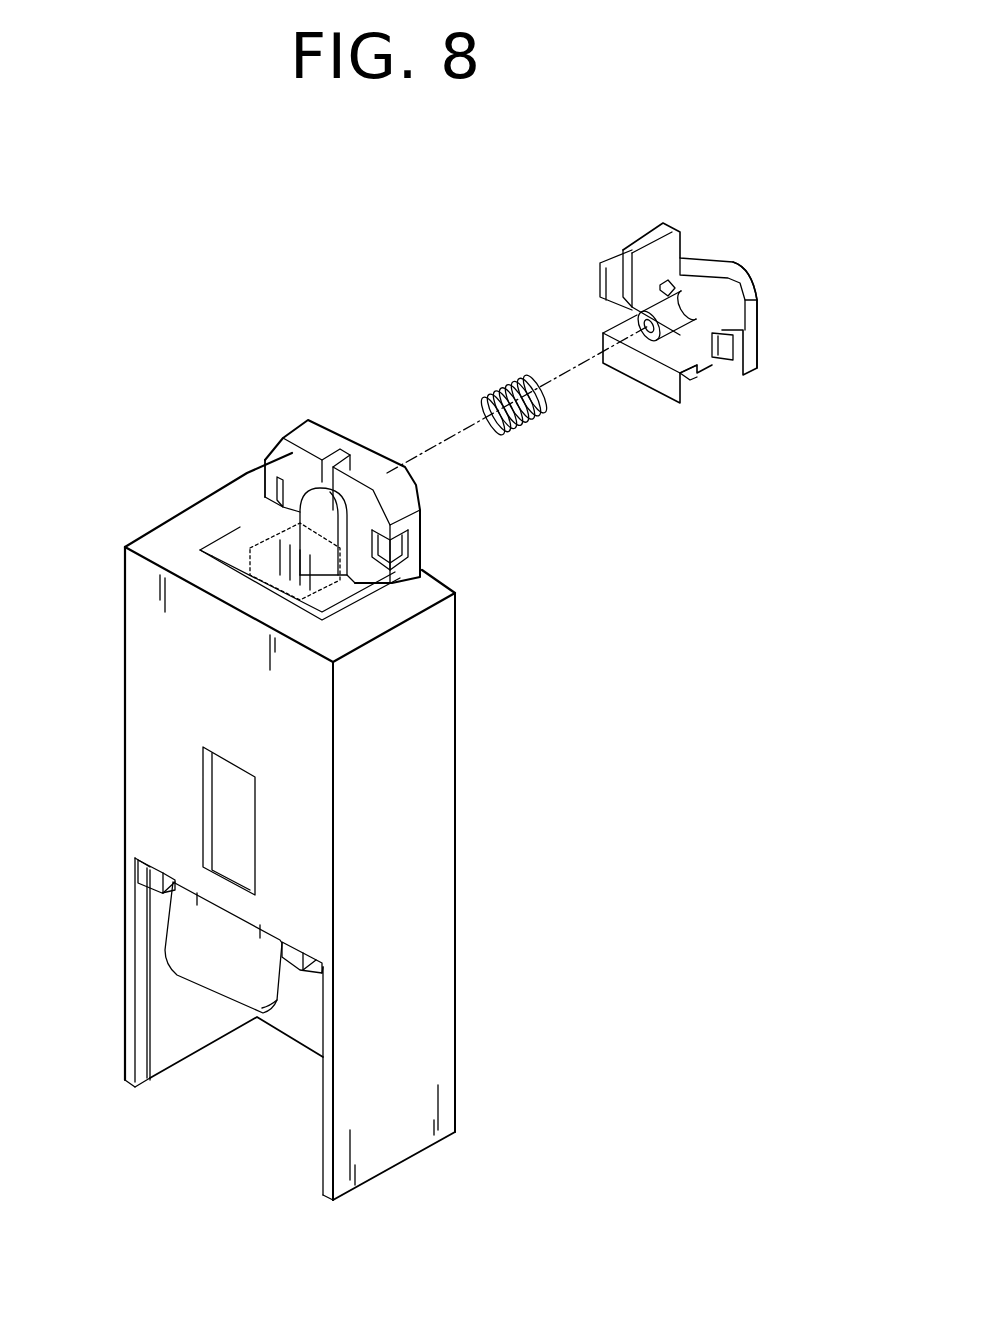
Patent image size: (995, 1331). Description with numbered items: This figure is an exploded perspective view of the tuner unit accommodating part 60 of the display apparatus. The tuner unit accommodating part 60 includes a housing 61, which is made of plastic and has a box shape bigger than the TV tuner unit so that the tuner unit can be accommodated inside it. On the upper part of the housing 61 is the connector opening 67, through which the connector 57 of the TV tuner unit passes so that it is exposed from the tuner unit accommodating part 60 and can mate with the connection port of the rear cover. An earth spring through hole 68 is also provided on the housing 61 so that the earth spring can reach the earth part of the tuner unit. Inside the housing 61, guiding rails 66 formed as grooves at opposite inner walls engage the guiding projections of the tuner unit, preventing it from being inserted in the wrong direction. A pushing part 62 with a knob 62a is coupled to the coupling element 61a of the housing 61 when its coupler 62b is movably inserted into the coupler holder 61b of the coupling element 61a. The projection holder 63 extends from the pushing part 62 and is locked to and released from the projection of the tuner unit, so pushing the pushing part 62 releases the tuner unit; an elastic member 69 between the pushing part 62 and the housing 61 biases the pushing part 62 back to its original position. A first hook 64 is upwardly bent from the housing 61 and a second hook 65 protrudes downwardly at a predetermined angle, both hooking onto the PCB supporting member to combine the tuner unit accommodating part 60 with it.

The connector 57 is at (247, 535).
The tuner unit accommodating part 60 is at (613, 860).
The housing 61 is at (383, 1157).
The coupling element 61a is at (323, 435).
The coupler holder 61b is at (393, 553).
The pushing part 62 is at (710, 290).
The knob 62a is at (752, 283).
The coupler 62b is at (723, 360).
The projection holder 63 is at (652, 380).
The first hook 64 is at (310, 967).
The second hook 65 is at (240, 988).
The guiding rails 66 is at (150, 1080).
The connector opening 67 is at (203, 552).
The earth spring through hole 68 is at (230, 812).
The elastic member 69 is at (498, 383).